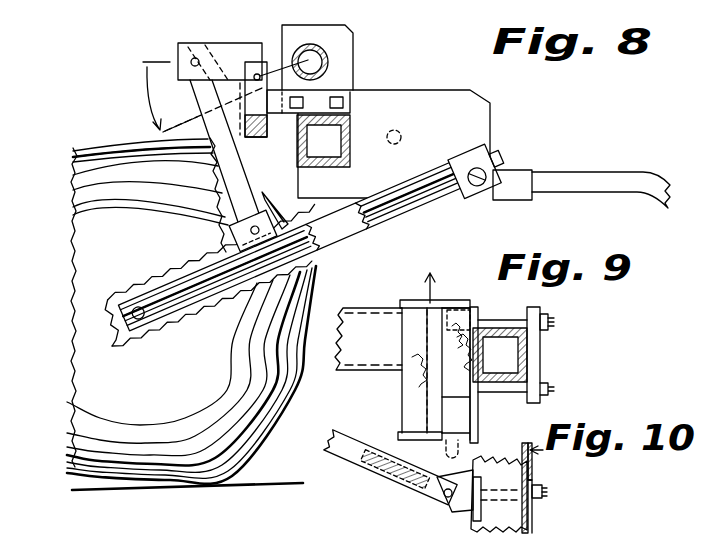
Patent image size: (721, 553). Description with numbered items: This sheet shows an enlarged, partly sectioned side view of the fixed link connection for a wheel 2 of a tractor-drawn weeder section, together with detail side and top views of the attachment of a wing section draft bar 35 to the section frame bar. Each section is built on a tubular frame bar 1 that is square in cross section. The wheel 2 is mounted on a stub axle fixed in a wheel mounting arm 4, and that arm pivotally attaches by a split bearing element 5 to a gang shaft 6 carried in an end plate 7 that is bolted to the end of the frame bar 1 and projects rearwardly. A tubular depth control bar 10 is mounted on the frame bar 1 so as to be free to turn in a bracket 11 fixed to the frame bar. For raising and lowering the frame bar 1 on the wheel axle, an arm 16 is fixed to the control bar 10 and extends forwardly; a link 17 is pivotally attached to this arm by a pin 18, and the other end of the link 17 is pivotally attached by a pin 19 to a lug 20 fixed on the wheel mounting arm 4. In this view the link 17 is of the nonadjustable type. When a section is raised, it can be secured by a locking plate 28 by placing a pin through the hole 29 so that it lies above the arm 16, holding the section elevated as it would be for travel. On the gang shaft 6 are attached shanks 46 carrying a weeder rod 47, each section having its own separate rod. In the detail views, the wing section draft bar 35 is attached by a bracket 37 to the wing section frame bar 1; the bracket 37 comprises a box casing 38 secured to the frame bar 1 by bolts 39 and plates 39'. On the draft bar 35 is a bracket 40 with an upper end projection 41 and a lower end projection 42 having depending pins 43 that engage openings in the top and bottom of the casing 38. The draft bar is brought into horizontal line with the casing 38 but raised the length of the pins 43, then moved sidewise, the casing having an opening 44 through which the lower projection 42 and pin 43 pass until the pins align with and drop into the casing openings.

In FIG. 8, the tubular frame bar 1 is at (293, 132).
In FIG. 9, the tubular frame bar 1 is at (500, 330).
In FIG. 10, the tubular frame bar 1 is at (529, 465).
In FIG. 8, the wheel 2 is at (113, 156).
In FIG. 8, the arm 4 is at (350, 237).
In FIG. 8, the split bearing element 5 is at (492, 156).
In FIG. 8, the gang shaft 6 is at (473, 190).
In FIG. 8, the end plate 7 is at (398, 92).
In FIG. 8, the tubular depth control bar 10 is at (328, 62).
In FIG. 8, the bracket 11 is at (347, 27).
In FIG. 8, the arm 16 is at (233, 43).
In FIG. 8, the link 17 is at (232, 158).
In FIG. 8, the pin 18 is at (195, 58).
In FIG. 8, the pin 19 is at (290, 211).
In FIG. 8, the lug 20 is at (235, 236).
In FIG. 8, the locking plate 28 is at (259, 72).
In FIG. 8, the hole 29 is at (170, 97).
In FIG. 9, the wing section draft bar 35 is at (357, 308).
In FIG. 10, the wing section draft bar 35 is at (363, 467).
In FIG. 10, the bracket 37 is at (452, 508).
In FIG. 9, the box casing 38 is at (478, 423).
In FIG. 9, the bolt 39 is at (574, 353).
In FIG. 10, the bolt 39 is at (562, 493).
In FIG. 10, the plate 39' is at (562, 506).
In FIG. 9, the bracket 40 is at (415, 397).
In FIG. 9, the upper end projection 41 is at (408, 300).
In FIG. 9, the lower end projection 42 is at (402, 435).
In FIG. 9, the depending pin 43 is at (453, 297).
In FIG. 9, the opening 44 is at (457, 417).
In FIG. 8, the shank 46 is at (573, 175).
In FIG. 8, the weeder rod 47 is at (537, 0).